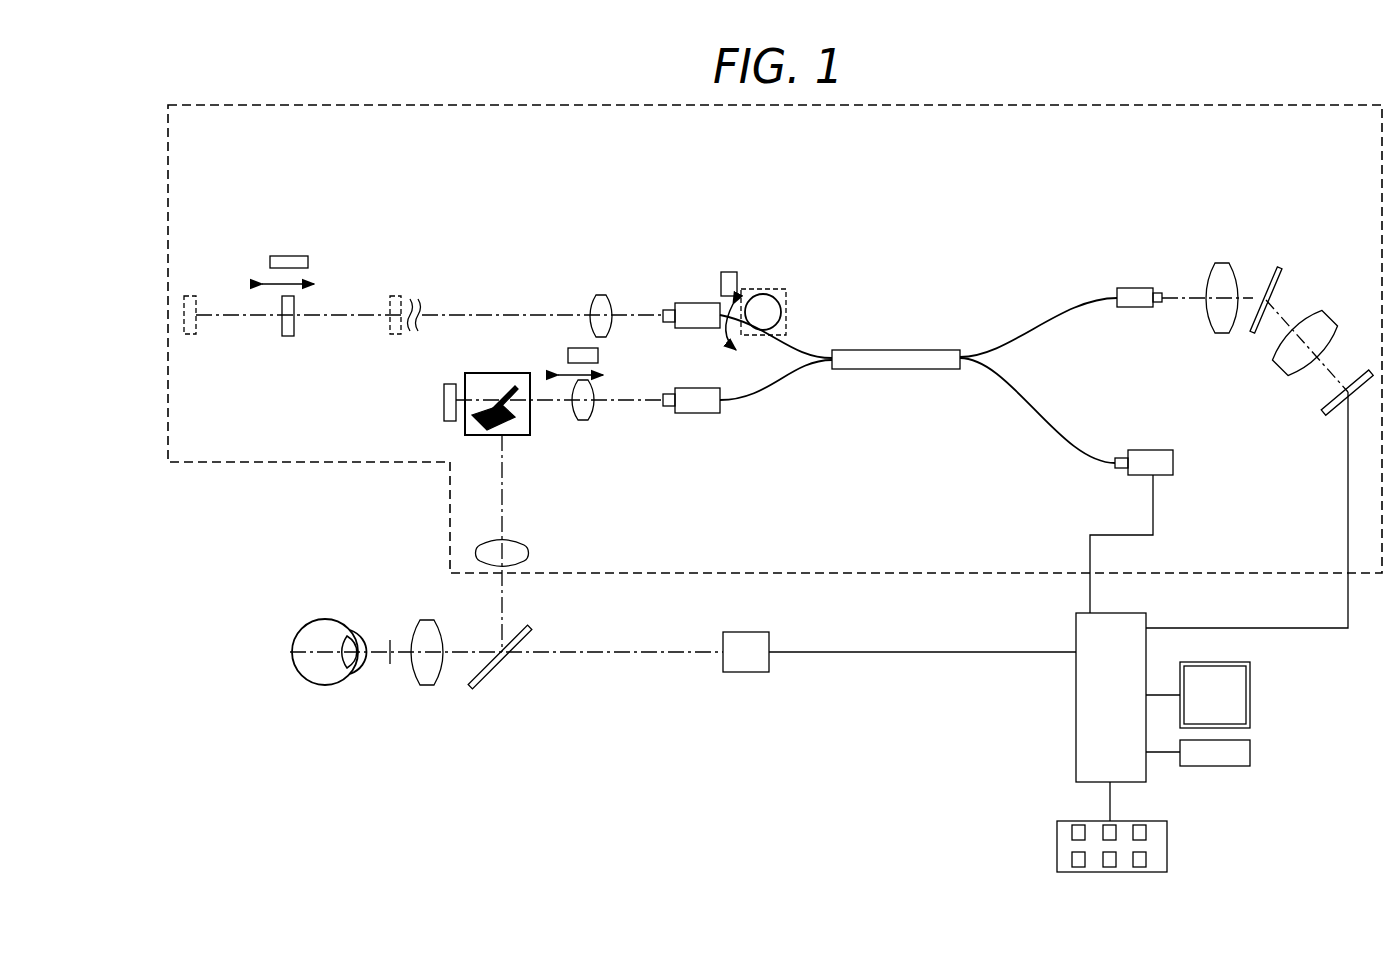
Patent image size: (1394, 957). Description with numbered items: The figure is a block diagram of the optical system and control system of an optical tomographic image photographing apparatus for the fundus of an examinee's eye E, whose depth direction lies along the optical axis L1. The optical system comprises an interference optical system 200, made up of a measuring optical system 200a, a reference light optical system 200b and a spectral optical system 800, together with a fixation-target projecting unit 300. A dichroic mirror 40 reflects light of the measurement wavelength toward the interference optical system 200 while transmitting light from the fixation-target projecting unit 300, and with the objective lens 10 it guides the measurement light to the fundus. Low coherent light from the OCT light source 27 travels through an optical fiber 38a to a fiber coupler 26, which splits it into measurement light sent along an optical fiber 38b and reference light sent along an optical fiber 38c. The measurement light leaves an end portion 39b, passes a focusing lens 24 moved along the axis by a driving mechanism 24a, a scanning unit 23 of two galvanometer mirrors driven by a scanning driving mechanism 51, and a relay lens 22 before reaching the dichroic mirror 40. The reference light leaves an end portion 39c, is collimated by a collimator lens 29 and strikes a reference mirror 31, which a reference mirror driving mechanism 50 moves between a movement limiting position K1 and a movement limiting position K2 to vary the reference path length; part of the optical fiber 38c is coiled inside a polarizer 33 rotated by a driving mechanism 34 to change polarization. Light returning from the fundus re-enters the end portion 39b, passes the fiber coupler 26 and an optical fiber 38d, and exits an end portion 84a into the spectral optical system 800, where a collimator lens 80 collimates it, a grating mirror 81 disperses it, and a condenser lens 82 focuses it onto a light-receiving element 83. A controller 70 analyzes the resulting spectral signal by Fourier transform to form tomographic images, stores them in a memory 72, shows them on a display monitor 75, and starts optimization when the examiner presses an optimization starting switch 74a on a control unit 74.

The objective lens 10 is at (428, 625).
The relay lens 22 is at (528, 551).
The scanning unit 23 is at (483, 373).
The focusing lens 24 is at (583, 421).
The driving mechanism 24a is at (582, 358).
The fiber coupler 26 is at (887, 350).
The OCT light source 27 is at (1175, 462).
The collimator lens 29 is at (600, 296).
The reference mirror 31 is at (282, 316).
The polarizer 33 is at (770, 289).
The driving mechanism 34 is at (727, 272).
The optical fiber 38a is at (1048, 434).
The optical fiber 38b is at (775, 386).
The optical fiber 38c is at (797, 352).
The optical fiber 38d is at (1042, 318).
The end portion 39b is at (665, 406).
The end portion 39c is at (666, 310).
The dichroic mirror 40 is at (502, 662).
The reference mirror driving mechanism 50 is at (289, 256).
The scanning driving mechanism 51 is at (444, 398).
The controller 70 is at (1076, 695).
The memory 72 is at (1251, 747).
The control unit 74 is at (1168, 842).
The optimization starting switch 74a is at (1076, 832).
The display monitor 75 is at (1251, 686).
The collimator lens 80 is at (1224, 270).
The grating mirror 81 is at (1278, 275).
The condenser lens 82 is at (1290, 356).
The light-receiving element 83 is at (1330, 405).
The end portion 84a is at (1159, 288).
The interference optical system 200 is at (323, 462).
The measuring optical system 200a is at (730, 518).
The reference light optical system 200b is at (484, 213).
The fixation-target projecting unit 300 is at (752, 672).
The spectral optical system 800 is at (1345, 272).
The examinee's eye E is at (321, 687).
The movement limiting position K1 is at (395, 296).
The movement limiting position K2 is at (187, 296).
The optical axis L1 is at (390, 656).